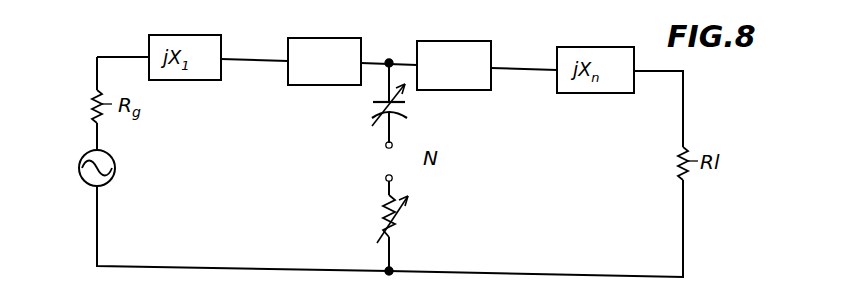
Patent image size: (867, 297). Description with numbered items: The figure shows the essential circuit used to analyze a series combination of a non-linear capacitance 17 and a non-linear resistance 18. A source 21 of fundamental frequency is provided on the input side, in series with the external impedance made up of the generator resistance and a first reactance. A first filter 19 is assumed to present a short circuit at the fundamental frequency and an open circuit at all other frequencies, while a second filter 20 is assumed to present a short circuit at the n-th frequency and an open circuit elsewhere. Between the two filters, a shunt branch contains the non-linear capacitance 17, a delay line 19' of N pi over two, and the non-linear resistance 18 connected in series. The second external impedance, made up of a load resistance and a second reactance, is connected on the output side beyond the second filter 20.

The non-linear capacitance 17 is at (375, 105).
The non-linear resistance 18 is at (380, 215).
The filter F1 19 is at (328, 47).
The delay line 19' is at (369, 168).
The filter Fn 20 is at (467, 40).
The source 21 is at (79, 172).